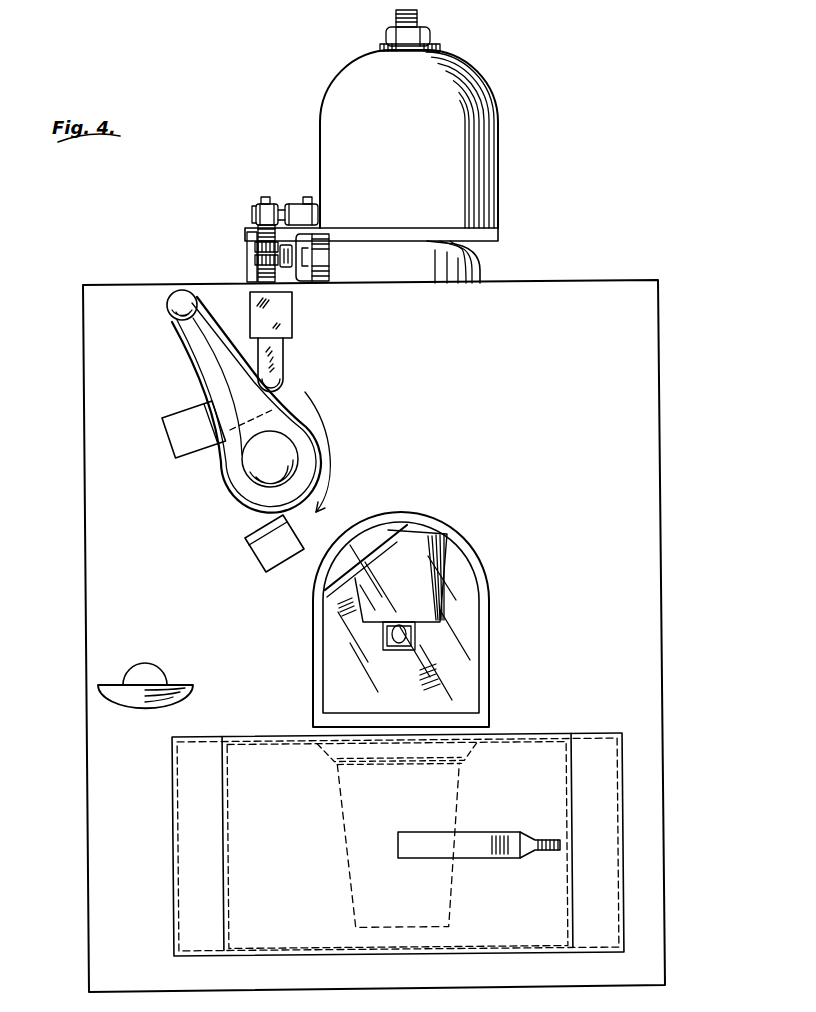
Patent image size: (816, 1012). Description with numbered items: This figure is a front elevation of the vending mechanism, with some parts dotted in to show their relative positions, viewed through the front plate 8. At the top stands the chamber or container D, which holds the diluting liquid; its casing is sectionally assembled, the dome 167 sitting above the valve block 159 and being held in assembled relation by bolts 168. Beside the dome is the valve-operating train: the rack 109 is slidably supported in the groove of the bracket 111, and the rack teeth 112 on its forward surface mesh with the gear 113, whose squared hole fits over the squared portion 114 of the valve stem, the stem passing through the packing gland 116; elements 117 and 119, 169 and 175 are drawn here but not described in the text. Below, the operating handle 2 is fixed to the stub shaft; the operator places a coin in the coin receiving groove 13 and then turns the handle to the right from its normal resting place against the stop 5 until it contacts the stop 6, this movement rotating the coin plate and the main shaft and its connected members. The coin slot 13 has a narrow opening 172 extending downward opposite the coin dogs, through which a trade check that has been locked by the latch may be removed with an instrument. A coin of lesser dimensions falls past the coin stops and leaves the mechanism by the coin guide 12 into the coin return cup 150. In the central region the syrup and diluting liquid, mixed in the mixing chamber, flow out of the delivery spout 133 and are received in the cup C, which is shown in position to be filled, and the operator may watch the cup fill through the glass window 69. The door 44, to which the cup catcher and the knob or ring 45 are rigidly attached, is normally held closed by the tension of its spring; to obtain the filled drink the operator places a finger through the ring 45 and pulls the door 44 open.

The operating handle 2 is at (170, 305).
The stop 5 is at (176, 450).
The stop 6 is at (262, 558).
The front plate 8 is at (616, 296).
The coin guide 12 is at (134, 678).
The coin receiving groove 13 is at (282, 322).
The door 44 is at (536, 756).
The knob or ring 45 is at (545, 840).
The glass window 69 is at (468, 654).
The rack 109 is at (282, 196).
The bracket 111 is at (249, 272).
The rack teeth 112 is at (258, 232).
The gear 113 is at (256, 248).
The squared portion of valve stem 114 is at (256, 261).
The packing gland 116 is at (287, 266).
The valve cap 117 is at (254, 213).
The valve fitting 119 is at (305, 197).
The delivery spout 133 is at (393, 648).
The coin return cup 150 is at (150, 707).
The valve block 159 is at (463, 268).
The dome 167 is at (326, 98).
The bolts 168 is at (396, 15).
The nut 169 is at (430, 36).
The narrow opening 172 is at (280, 384).
The coupling 175 is at (314, 269).
The cup C is at (428, 546).
The chamber or container D is at (512, 136).